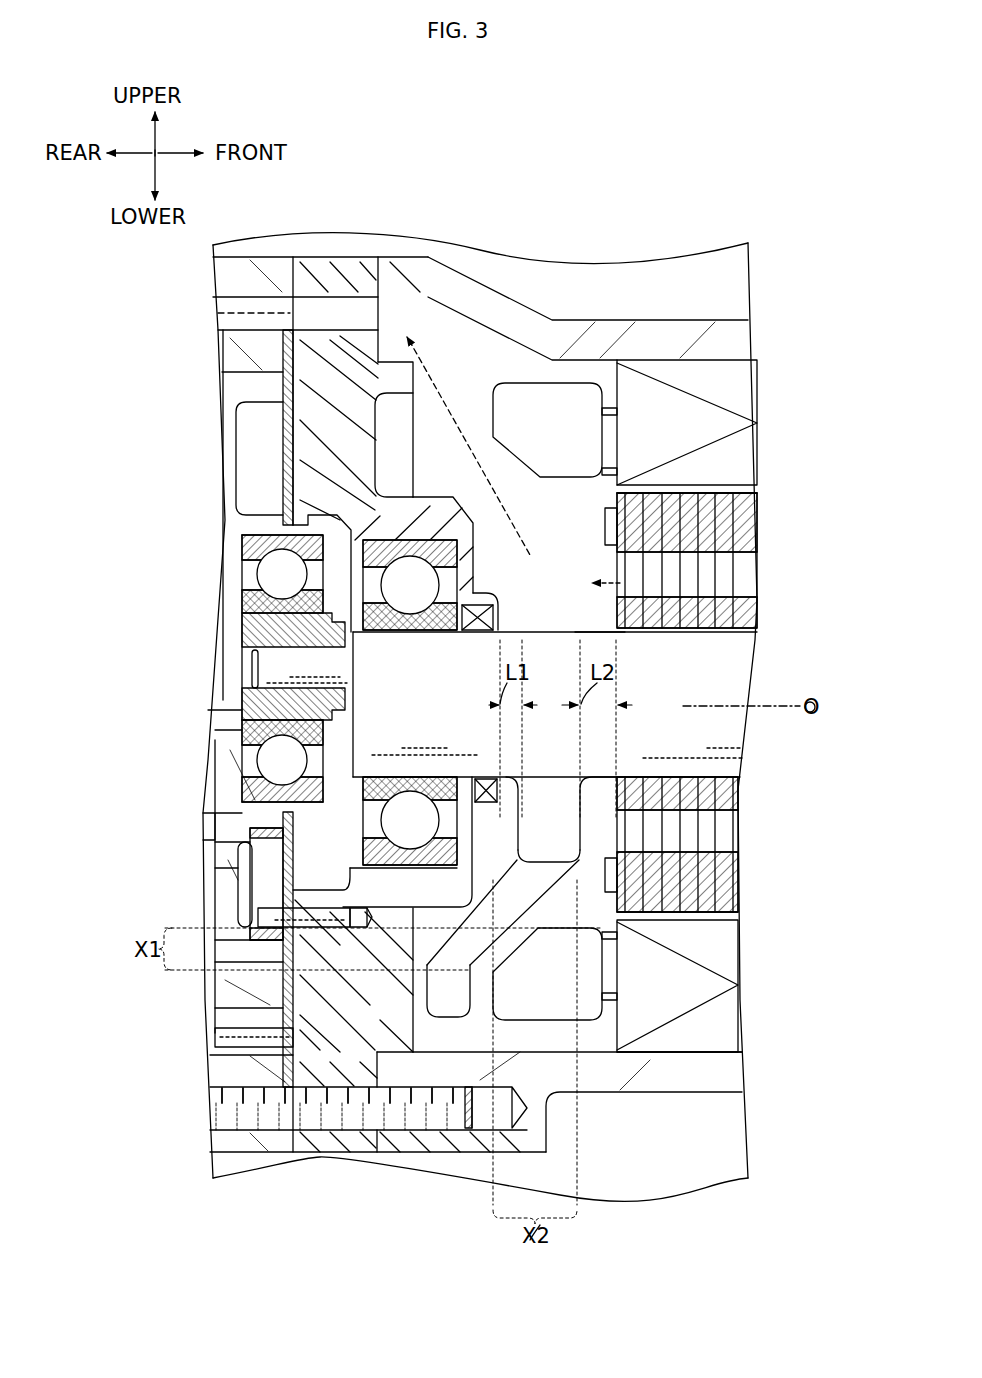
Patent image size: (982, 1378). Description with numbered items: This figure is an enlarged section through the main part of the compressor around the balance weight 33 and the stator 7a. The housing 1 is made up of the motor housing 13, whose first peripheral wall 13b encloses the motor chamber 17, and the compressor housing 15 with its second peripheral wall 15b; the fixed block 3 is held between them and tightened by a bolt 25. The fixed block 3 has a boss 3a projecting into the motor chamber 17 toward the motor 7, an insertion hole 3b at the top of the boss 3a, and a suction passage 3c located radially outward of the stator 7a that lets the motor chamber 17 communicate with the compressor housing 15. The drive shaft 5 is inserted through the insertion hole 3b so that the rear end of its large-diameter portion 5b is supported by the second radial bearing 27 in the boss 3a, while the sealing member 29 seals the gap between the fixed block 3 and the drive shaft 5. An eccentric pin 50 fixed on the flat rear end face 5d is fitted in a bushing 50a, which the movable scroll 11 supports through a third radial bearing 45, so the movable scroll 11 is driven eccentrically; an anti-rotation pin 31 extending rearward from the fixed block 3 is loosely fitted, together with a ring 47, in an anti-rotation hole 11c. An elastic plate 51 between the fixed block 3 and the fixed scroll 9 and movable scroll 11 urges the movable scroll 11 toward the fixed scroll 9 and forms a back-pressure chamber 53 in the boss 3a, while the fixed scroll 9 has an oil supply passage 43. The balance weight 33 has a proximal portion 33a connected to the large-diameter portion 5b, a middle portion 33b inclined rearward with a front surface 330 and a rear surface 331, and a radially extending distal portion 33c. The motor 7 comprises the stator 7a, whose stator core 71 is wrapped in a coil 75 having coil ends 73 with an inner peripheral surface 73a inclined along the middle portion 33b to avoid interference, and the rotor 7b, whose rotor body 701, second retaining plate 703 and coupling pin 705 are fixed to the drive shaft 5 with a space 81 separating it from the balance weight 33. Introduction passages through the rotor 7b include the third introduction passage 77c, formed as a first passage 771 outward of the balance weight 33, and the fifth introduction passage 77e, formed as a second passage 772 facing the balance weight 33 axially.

The housing 1 is at (527, 284).
The fixed block 3 is at (320, 1160).
The boss 3a is at (440, 502).
The insertion hole 3b is at (497, 631).
The suction passage 3c is at (352, 330).
The drive shaft 5 is at (722, 730).
The large-diameter portion 5b is at (588, 633).
The rear end face 5d is at (294, 838).
The motor 7 is at (746, 916).
The stator 7a is at (683, 1056).
The rotor 7b is at (690, 486).
The fixed scroll 9 is at (246, 358).
The movable scroll 11 is at (254, 388).
The anti-rotation hole 11c is at (258, 890).
The motor housing 13 is at (661, 320).
The first peripheral wall 13b is at (592, 1082).
The compressor housing 15 is at (230, 272).
The second peripheral wall 15b is at (228, 1145).
The motor chamber 17 is at (578, 567).
The bolt 25 is at (212, 1112).
The second radial bearing 27 is at (438, 634).
The sealing member 29 is at (482, 776).
The anti-rotation pin 31 is at (315, 910).
The balance weight 33 is at (657, 832).
The proximal portion 33a is at (523, 846).
The middle portion 33b is at (412, 878).
The distal portion 33c is at (432, 990).
The oil supply passage 43 is at (236, 1040).
The third radial bearing 45 is at (240, 548).
The ring 47 is at (288, 834).
The eccentric pin 50 is at (338, 667).
The bushing 50a is at (354, 700).
The elastic plate 51 is at (295, 456).
The back-pressure chamber 53 is at (326, 532).
The stator core 71 is at (713, 1012).
The coil end 73 is at (600, 1010).
The inner peripheral surface 73a is at (528, 936).
The coil 75 is at (620, 966).
The space 81 is at (592, 798).
The front surface 330 is at (498, 953).
The rear surface 331 is at (480, 877).
The rotor body 701 is at (742, 486).
The second retaining plate 703 is at (617, 487).
The coupling pin 705 is at (606, 533).
The first passage 771 is at (687, 560).
The second passage 772 is at (677, 844).
The third introduction passage 77c is at (752, 598).
The fifth introduction passage 77e is at (722, 868).